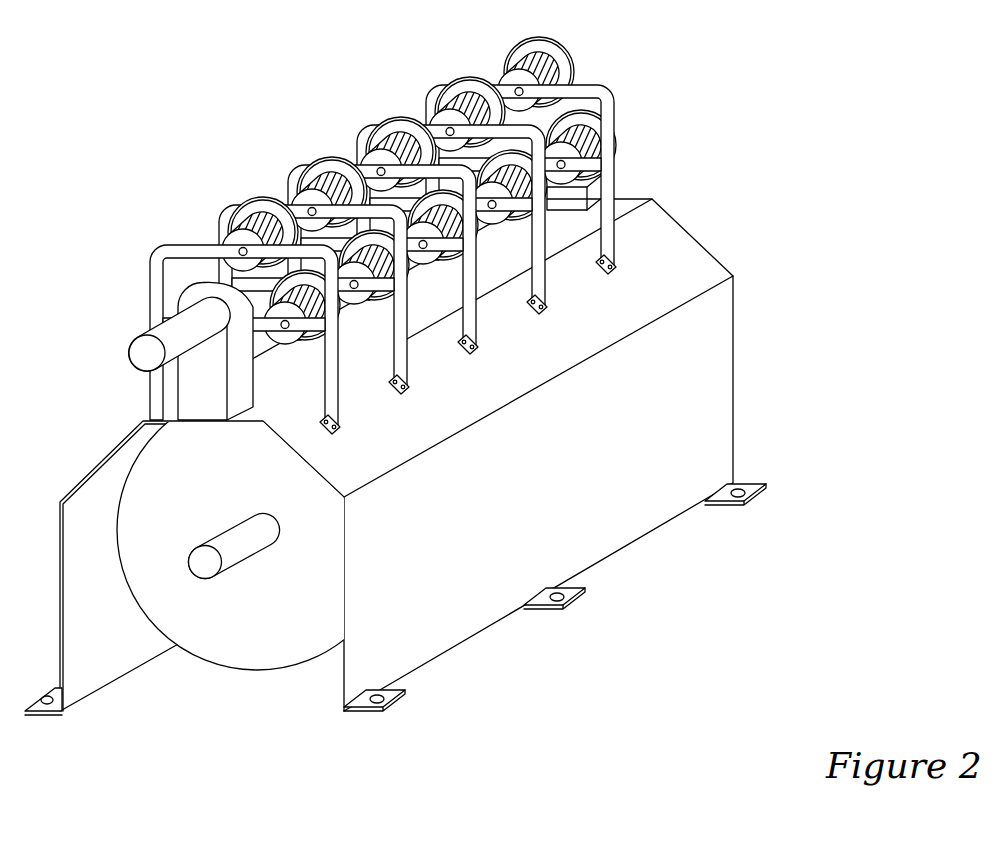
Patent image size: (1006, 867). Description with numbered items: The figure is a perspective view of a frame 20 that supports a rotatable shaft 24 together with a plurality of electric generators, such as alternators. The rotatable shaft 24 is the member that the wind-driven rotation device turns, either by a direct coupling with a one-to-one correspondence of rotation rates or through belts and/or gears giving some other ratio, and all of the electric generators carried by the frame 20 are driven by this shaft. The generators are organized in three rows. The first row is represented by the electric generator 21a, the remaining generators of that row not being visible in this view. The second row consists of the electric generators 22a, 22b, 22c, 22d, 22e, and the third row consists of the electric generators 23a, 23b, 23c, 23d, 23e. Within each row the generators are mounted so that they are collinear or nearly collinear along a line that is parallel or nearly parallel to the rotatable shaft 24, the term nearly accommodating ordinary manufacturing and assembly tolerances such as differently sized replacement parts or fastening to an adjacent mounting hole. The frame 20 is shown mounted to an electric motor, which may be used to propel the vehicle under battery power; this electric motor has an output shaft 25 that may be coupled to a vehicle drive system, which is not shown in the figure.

The frame 20 is at (387, 365).
The electric generator 21a is at (208, 288).
The electric generator 22a is at (252, 215).
The electric generator 22b is at (321, 175).
The electric generator 22c is at (390, 135).
The electric generator 22d is at (459, 95).
The electric generator 22e is at (528, 55).
The electric generator 23a is at (312, 303).
The electric generator 23b is at (381, 263).
The electric generator 23c is at (450, 223).
The electric generator 23d is at (519, 183).
The electric generator 23e is at (588, 143).
The rotatable shaft 24 is at (146, 354).
The output shaft 25 is at (205, 562).